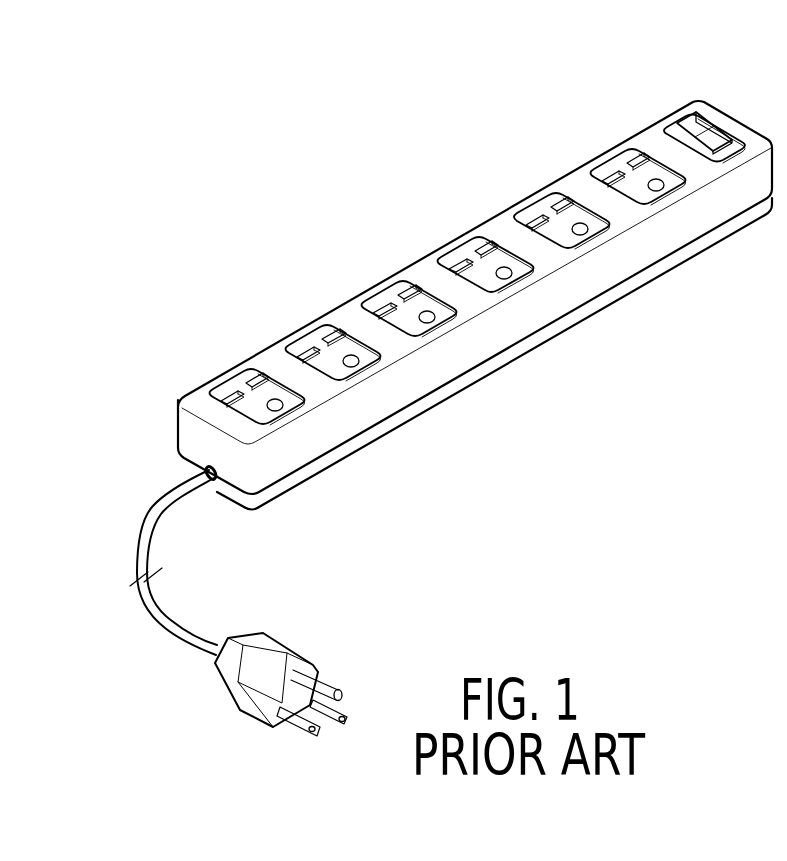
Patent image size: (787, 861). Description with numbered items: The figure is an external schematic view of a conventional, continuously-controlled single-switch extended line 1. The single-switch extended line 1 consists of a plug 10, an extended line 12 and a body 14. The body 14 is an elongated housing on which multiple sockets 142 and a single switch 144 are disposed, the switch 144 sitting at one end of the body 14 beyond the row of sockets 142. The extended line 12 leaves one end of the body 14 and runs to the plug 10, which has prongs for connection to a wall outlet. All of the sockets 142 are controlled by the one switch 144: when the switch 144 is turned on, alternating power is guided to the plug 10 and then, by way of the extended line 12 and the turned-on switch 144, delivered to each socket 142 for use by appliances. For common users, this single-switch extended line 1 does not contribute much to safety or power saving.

The single-switch extended line 1 is at (151, 49).
The plug 10 is at (280, 652).
The extended line 12 is at (145, 522).
The body 14 is at (520, 320).
The socket 142 is at (467, 253).
The switch 144 is at (705, 115).